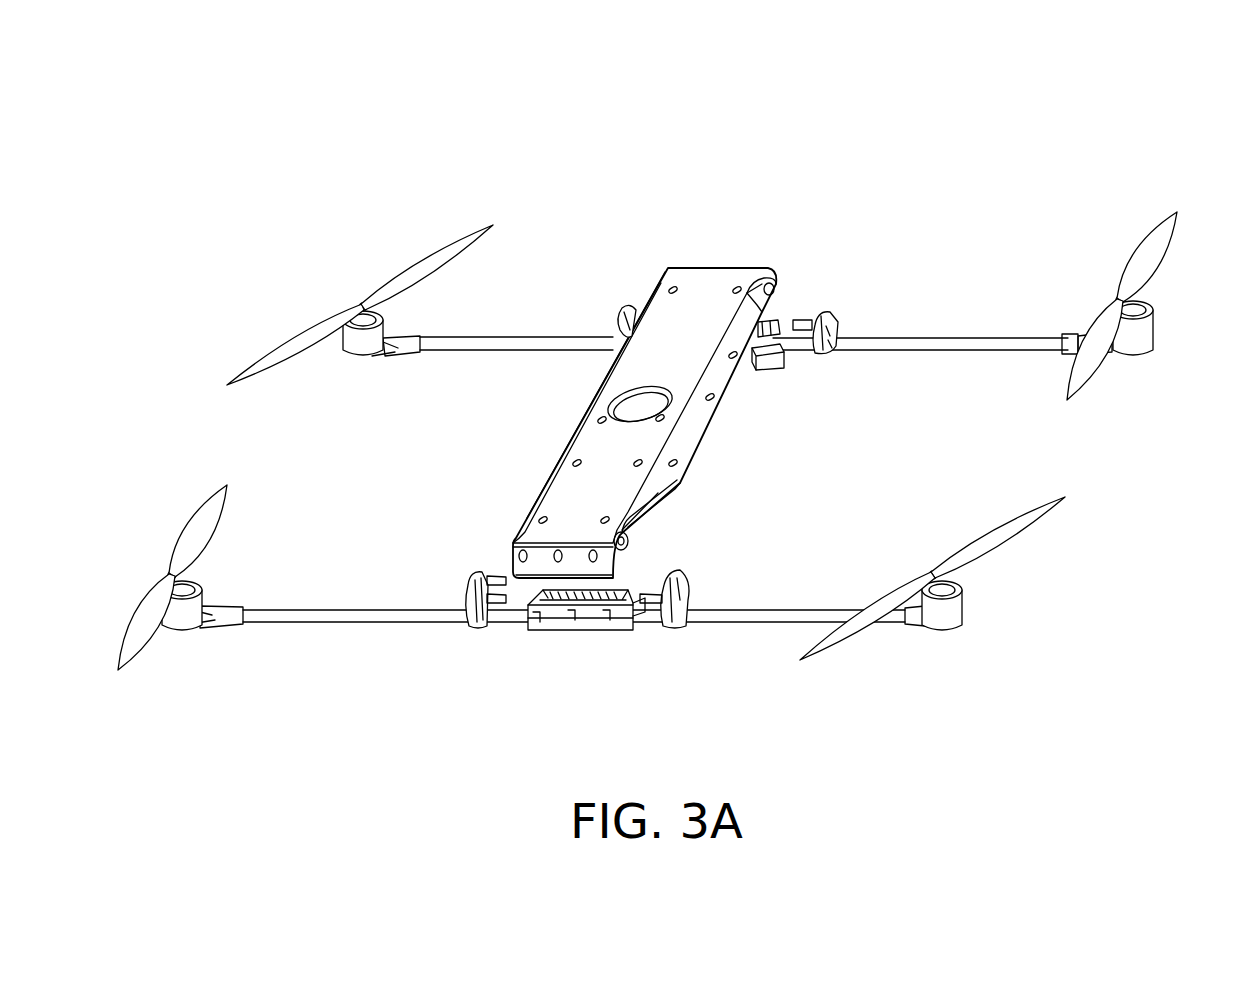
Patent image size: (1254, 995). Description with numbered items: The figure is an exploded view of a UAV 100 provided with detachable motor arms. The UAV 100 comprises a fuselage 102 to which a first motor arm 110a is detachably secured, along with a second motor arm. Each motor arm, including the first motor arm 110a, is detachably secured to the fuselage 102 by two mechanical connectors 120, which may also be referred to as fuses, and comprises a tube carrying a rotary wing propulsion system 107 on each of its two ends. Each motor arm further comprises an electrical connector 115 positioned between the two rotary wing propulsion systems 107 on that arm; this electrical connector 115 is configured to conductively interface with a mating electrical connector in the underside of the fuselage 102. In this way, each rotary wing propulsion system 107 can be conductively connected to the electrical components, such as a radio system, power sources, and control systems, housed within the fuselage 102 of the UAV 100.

The UAV 100 is at (767, 138).
The fuselage 102 is at (723, 284).
The rotary wing propulsion system 107 is at (390, 326).
The first motor arm 110a is at (515, 352).
The electrical connector 115 is at (763, 373).
The mechanical connector 120 is at (622, 303).